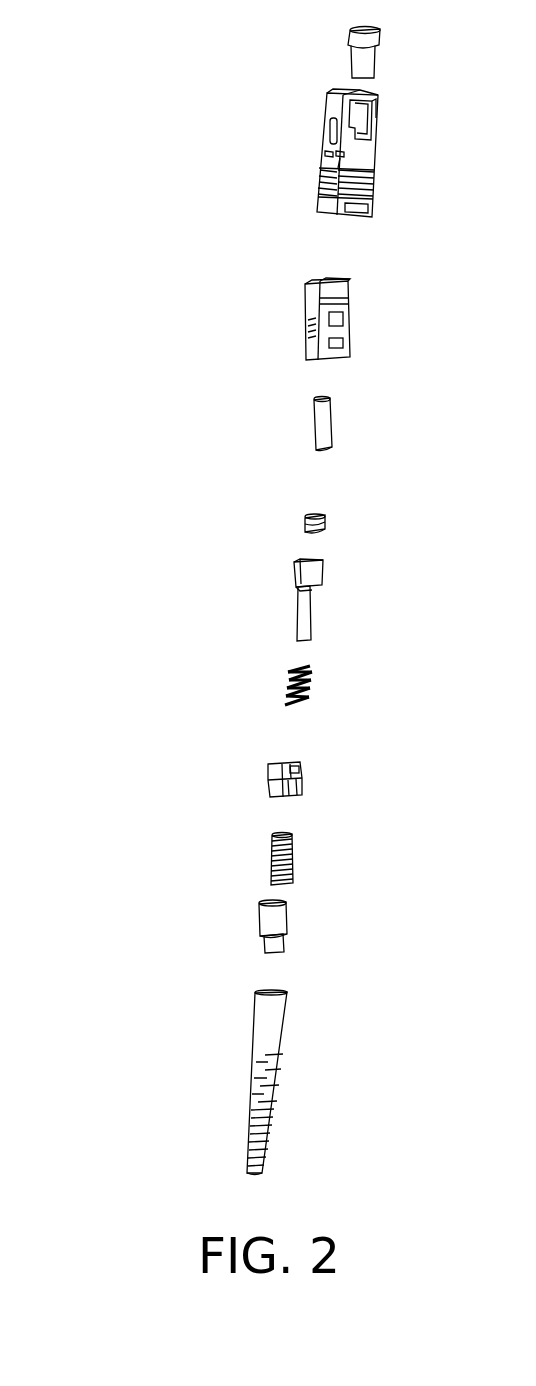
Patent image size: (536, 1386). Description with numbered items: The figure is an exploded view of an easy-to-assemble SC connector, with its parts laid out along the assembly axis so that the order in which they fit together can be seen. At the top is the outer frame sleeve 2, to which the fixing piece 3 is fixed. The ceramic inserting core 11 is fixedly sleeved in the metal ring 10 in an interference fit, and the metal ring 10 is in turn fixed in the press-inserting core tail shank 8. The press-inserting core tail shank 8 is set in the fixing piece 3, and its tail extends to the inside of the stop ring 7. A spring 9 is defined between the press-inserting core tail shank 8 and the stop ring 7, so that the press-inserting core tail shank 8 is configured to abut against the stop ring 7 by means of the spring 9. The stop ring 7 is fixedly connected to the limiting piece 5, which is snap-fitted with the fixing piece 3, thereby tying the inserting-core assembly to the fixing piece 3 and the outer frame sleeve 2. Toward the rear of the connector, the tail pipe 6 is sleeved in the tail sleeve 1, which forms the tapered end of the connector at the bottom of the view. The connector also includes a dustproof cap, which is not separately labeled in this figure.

The tail sleeve 1 is at (255, 1042).
The outer frame sleeve 2 is at (327, 157).
The fixing piece 3 is at (317, 313).
The limiting piece 5 is at (277, 777).
The tail pipe 6 is at (263, 932).
The stop ring 7 is at (273, 860).
The press-inserting core tail shank 8 is at (310, 573).
The spring 9 is at (291, 683).
The metal ring 10 is at (307, 522).
The ceramic inserting core 11 is at (317, 420).